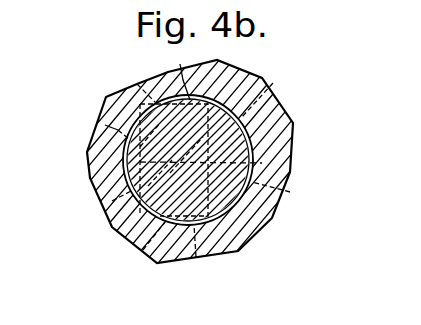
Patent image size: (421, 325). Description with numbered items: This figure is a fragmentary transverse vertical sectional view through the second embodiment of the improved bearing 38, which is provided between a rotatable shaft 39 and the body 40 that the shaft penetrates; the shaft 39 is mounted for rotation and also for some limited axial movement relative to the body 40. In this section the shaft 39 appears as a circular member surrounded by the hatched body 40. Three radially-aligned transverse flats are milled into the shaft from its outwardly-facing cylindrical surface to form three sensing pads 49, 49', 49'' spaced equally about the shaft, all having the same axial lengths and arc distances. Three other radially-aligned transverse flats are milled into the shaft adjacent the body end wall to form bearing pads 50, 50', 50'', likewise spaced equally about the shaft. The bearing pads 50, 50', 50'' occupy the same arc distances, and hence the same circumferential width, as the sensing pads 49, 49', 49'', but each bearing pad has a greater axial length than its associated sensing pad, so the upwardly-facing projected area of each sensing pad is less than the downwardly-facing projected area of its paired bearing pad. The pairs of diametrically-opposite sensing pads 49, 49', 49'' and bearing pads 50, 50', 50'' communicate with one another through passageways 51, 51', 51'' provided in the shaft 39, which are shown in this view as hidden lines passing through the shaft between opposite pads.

The improved bearing 38 is at (312, 100).
The rotatable shaft 39 is at (272, 138).
The body 40 is at (99, 92).
The sensing pad 49 is at (166, 69).
The sensing pad 49' is at (90, 211).
The sensing pad 49'' is at (304, 196).
The bearing pad 50 is at (213, 263).
The bearing pad 50' is at (276, 86).
The bearing pad 50'' is at (76, 126).
The passageway 51 is at (242, 165).
The passageway 51' is at (124, 75).
The passageway 51'' is at (128, 252).